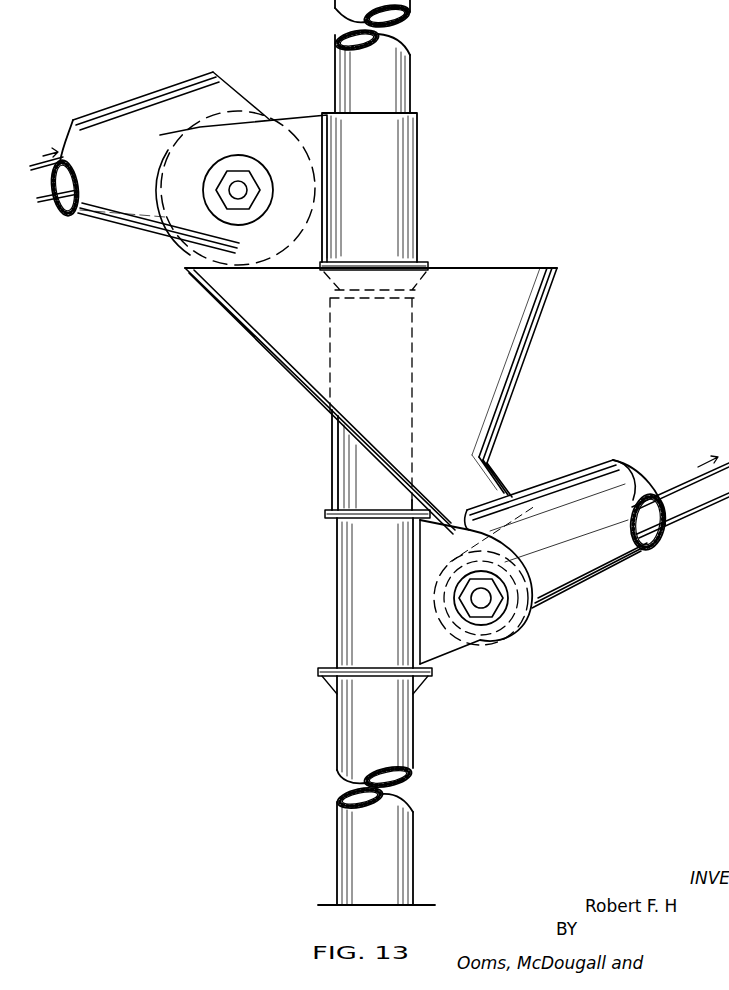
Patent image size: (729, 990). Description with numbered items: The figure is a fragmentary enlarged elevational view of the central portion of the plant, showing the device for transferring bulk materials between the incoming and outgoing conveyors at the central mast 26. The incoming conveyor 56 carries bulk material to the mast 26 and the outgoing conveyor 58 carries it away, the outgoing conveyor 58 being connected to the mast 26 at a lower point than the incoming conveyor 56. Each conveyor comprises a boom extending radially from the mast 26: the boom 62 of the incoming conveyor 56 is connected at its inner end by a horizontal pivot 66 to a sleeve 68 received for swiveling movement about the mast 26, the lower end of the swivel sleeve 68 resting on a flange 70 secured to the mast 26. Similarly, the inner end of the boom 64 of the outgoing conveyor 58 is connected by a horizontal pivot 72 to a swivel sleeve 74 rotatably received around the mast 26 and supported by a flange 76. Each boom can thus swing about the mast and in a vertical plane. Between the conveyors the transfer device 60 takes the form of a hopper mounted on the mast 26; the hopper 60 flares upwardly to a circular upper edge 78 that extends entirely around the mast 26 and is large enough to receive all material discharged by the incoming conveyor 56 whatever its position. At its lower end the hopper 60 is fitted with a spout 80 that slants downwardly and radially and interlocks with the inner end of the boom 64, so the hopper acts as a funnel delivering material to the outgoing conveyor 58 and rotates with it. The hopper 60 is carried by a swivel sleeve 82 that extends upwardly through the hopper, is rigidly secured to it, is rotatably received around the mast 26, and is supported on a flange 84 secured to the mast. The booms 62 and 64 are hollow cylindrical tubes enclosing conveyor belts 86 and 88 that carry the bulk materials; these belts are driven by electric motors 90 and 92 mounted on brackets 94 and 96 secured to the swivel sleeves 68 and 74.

The central mast 26 is at (410, 80).
The incoming conveyor 56 is at (178, 160).
The outgoing conveyor 58 is at (574, 546).
The transfer device 60 is at (397, 383).
The boom 62 is at (74, 214).
The boom 64 is at (632, 552).
The horizontal pivot 66 is at (235, 195).
The sleeve 68 is at (418, 182).
The flange 70 is at (430, 268).
The horizontal pivot 72 is at (482, 605).
The swivel sleeve 74 is at (337, 622).
The flange 76 is at (325, 677).
The circular upper edge 78 is at (555, 268).
The spout 80 is at (500, 472).
The swivel sleeve 82 is at (332, 463).
The flange 84 is at (325, 514).
The conveyor belt 86 is at (52, 158).
The conveyor belt 88 is at (673, 475).
The electric motor 90 is at (238, 92).
The electric motor 92 is at (518, 636).
The bracket 94 is at (303, 127).
The bracket 96 is at (450, 660).